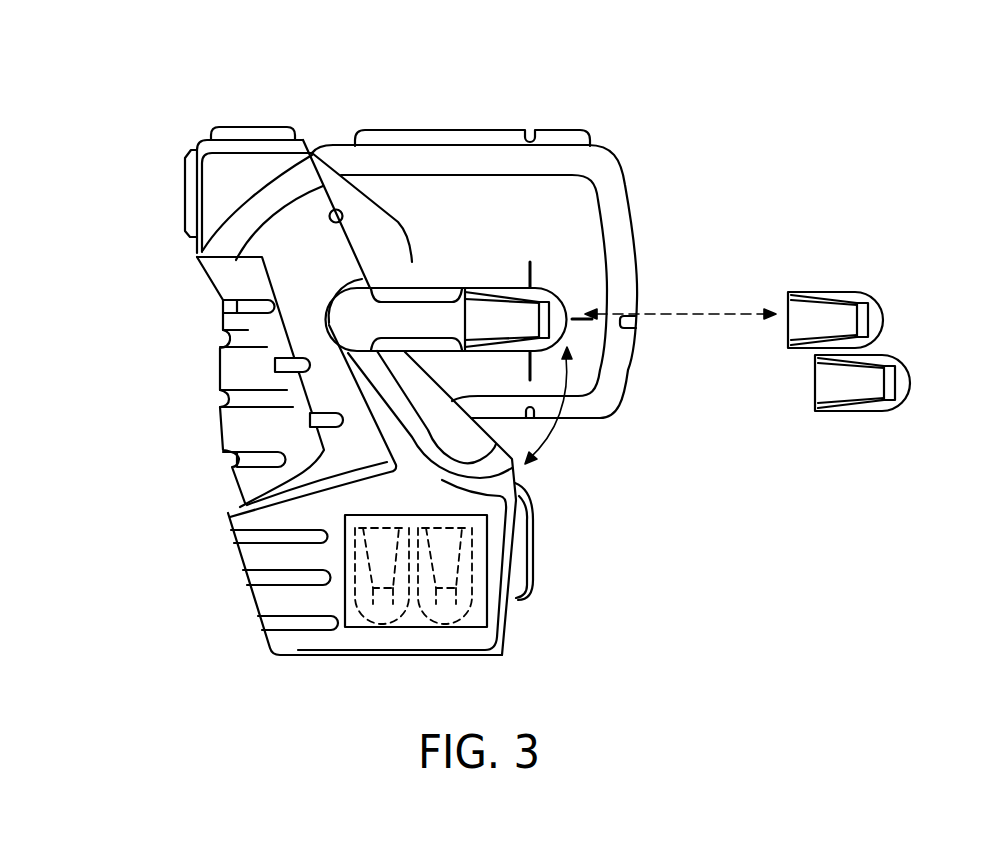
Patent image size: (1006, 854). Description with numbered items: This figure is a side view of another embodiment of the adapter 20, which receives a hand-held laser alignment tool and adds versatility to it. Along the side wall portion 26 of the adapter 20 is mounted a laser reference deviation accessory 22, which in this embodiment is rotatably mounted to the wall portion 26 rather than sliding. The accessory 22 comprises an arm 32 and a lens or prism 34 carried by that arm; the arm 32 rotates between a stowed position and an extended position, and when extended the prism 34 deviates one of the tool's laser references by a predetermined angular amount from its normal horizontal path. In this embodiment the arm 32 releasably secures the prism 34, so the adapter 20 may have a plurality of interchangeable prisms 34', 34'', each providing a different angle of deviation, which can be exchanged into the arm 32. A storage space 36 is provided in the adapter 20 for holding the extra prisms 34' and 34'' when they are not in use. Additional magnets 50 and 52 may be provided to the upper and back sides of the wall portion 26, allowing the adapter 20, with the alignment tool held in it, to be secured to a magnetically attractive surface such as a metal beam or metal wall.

The adapter 20 is at (190, 137).
The laser reference deviation accessory 22 is at (388, 291).
The wall portion 26 is at (320, 263).
The arm 32 is at (345, 327).
The prism 34 is at (507, 298).
The interchangeable prism 34' is at (835, 288).
The interchangeable prism 34'' is at (904, 383).
The storage space 36 is at (492, 607).
The magnet 50 is at (248, 127).
The magnet 52 is at (185, 206).